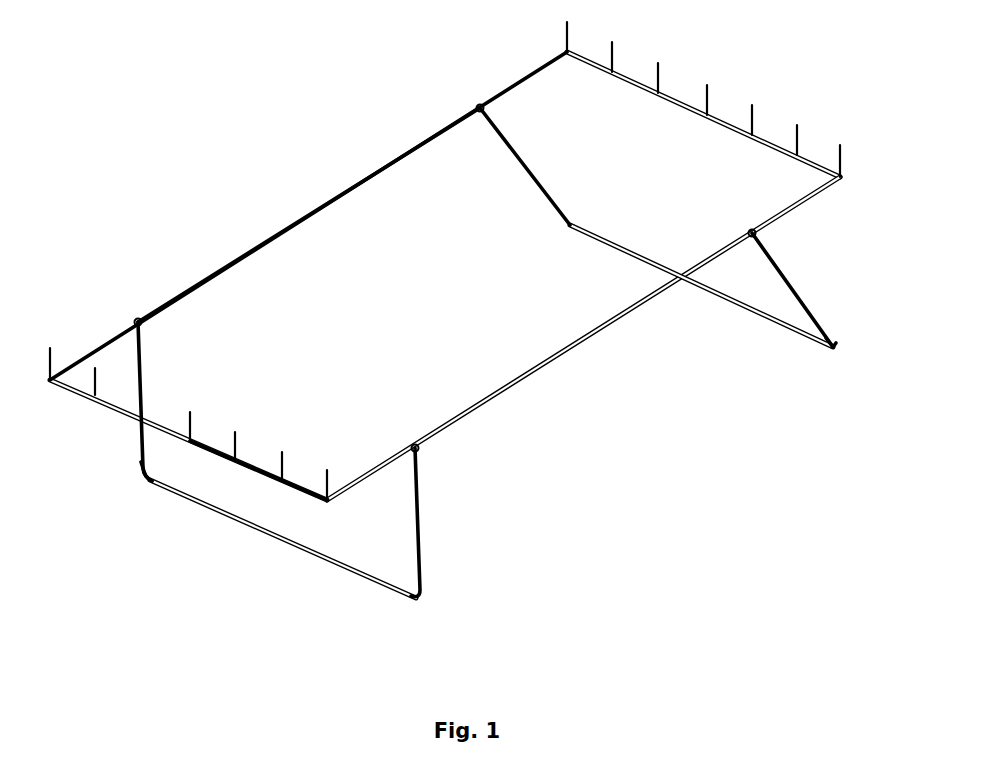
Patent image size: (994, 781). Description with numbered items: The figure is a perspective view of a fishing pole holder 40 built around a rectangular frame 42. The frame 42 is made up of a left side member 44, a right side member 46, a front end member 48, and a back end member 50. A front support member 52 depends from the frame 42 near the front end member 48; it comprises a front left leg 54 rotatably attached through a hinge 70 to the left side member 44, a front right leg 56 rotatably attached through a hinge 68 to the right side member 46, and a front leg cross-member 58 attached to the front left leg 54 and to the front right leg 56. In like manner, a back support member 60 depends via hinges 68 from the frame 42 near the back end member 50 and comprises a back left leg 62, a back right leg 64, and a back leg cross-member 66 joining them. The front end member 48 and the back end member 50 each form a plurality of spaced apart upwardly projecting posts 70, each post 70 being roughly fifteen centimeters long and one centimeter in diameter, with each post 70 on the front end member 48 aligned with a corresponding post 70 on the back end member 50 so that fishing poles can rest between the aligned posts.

The fishing pole holder 40 is at (455, 310).
The rectangular frame 42 is at (308, 216).
The left side member 44 is at (210, 283).
The right side member 46 is at (495, 390).
The front end member 48 is at (680, 108).
The back end member 50 is at (115, 413).
The front support member 52 is at (840, 348).
The front left leg 54 is at (541, 183).
The front right leg 56 is at (808, 311).
The front leg cross-member 58 is at (660, 262).
The back support member 60 is at (143, 475).
The back left leg 62 is at (143, 375).
The back right leg 64 is at (420, 523).
The back leg cross-member 66 is at (287, 538).
The hinge 68 is at (478, 105).
The post 70 is at (840, 145).